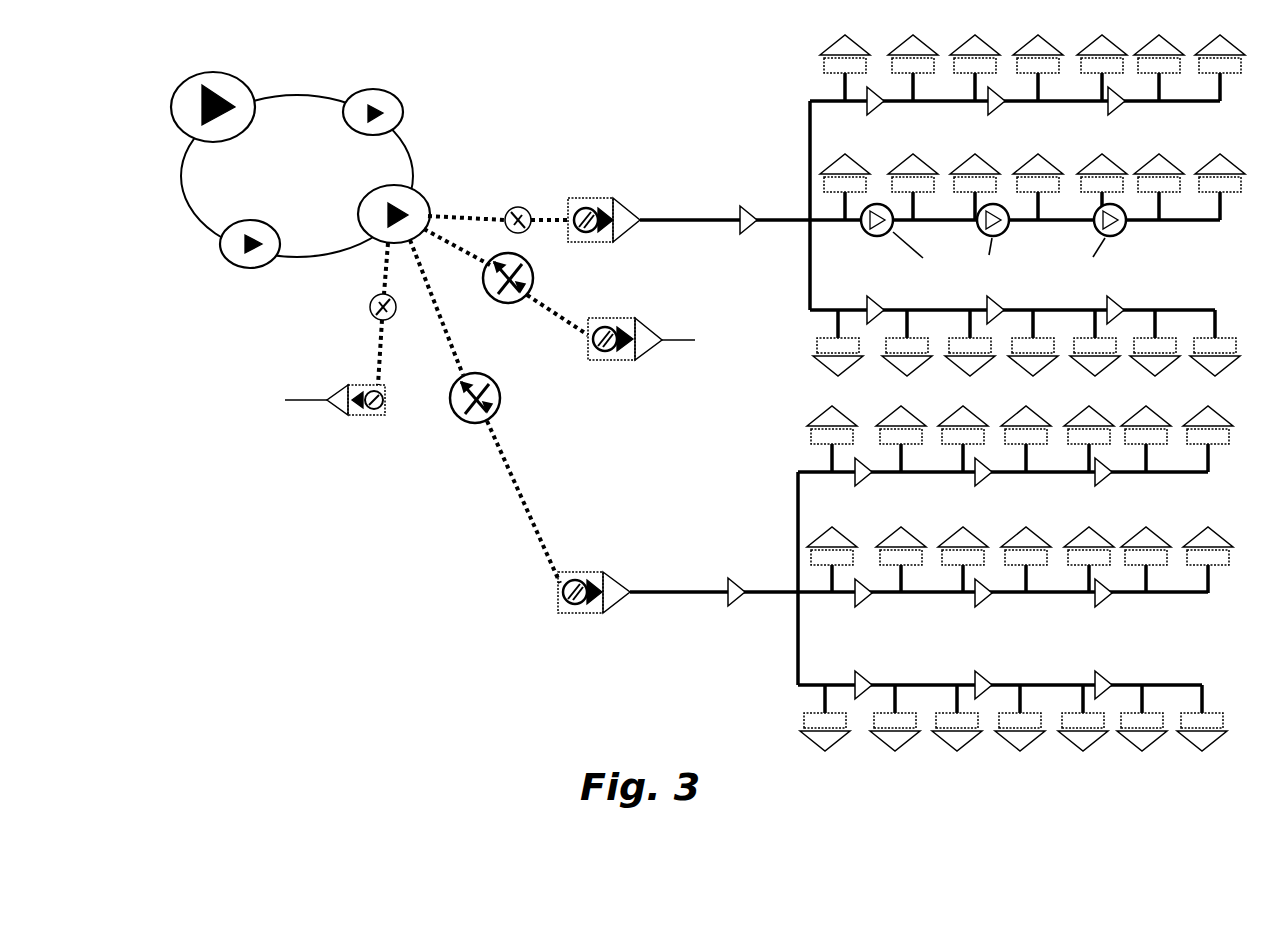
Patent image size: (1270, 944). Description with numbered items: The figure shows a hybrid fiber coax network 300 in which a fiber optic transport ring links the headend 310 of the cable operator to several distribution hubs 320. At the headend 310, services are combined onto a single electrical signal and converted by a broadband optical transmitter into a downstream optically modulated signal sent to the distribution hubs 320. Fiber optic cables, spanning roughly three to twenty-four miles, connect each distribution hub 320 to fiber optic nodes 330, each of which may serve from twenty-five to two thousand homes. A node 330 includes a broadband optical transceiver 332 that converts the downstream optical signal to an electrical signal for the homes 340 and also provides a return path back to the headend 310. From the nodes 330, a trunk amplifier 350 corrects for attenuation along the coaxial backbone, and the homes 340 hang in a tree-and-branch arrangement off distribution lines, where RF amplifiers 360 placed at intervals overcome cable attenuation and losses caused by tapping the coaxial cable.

The hybrid fiber coax network 300 is at (321, 670).
The headend 310 is at (247, 87).
The distribution hub 320 is at (410, 194).
The fiber optic node 330 is at (610, 148).
The broadband optical transceiver 332 is at (571, 615).
The homes 340 is at (783, 587).
The trunk amplifier 350 is at (762, 148).
The RF amplifiers 360 is at (1093, 263).